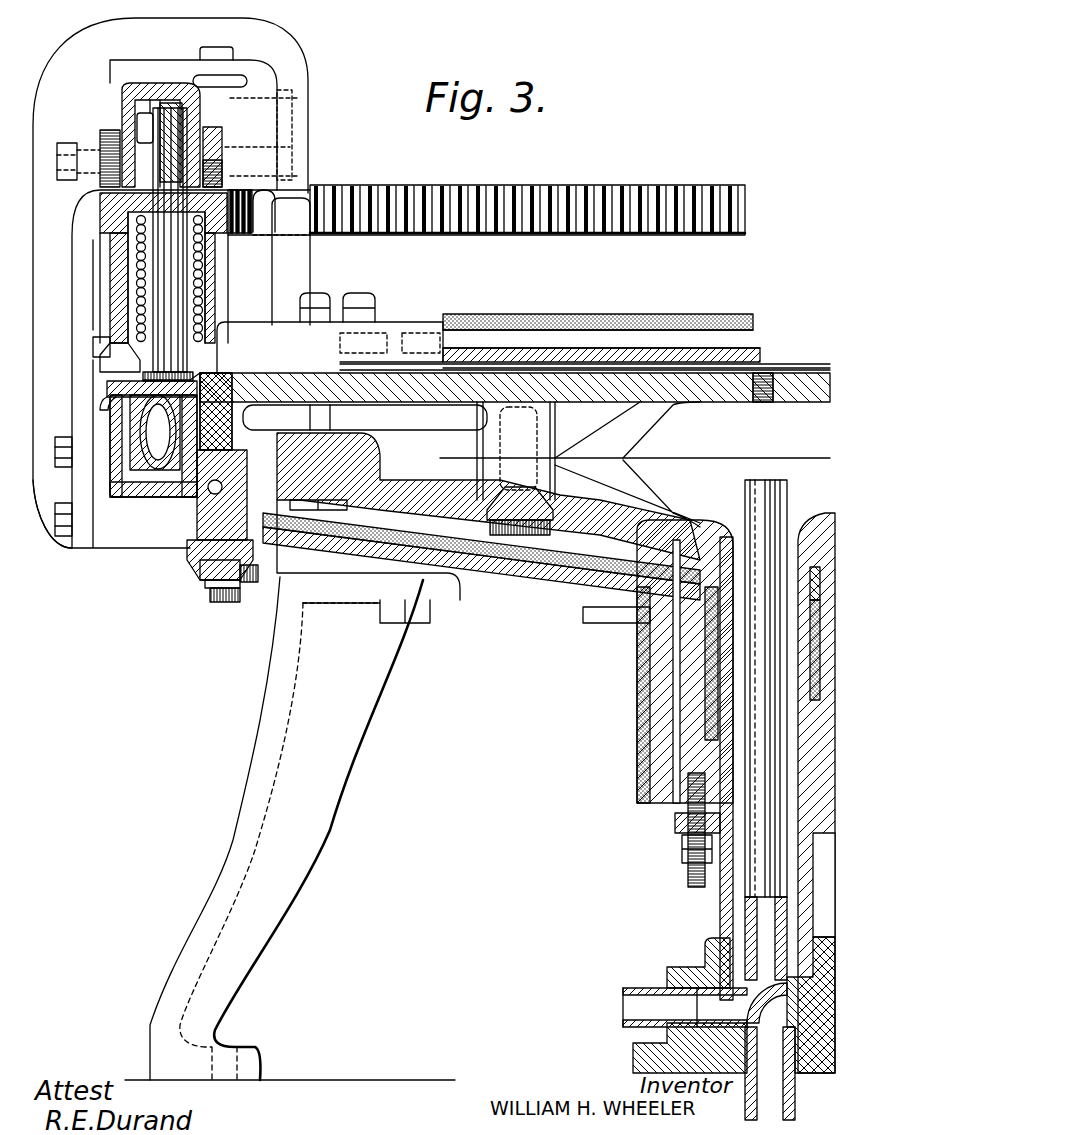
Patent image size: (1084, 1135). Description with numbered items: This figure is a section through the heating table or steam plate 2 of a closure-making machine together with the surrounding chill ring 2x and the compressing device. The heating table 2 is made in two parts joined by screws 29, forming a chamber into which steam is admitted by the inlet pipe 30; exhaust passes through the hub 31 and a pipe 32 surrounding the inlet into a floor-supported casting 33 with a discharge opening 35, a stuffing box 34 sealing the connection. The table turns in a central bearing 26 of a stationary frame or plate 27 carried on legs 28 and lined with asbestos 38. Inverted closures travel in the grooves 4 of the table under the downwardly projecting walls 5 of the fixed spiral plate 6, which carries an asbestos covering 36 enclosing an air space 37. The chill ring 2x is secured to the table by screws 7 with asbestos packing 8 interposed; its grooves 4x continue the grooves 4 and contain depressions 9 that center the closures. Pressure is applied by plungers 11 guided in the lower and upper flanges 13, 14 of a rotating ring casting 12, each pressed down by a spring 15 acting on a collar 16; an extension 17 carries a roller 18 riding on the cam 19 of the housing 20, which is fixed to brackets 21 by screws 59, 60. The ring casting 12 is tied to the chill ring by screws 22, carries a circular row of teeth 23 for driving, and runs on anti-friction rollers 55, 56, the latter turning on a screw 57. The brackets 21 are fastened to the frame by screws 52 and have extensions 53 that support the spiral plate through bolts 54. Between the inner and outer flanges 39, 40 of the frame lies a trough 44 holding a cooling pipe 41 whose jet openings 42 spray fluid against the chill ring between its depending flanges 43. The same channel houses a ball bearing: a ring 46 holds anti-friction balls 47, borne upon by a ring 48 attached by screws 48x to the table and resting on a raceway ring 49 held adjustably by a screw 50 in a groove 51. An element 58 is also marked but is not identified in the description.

The heating table or steam plate 2 is at (620, 370).
The chill ring 2x is at (202, 378).
The channels or grooves 4 is at (462, 372).
The grooves of the chill ring 4x is at (100, 352).
The downwardly projecting walls or ribs 5 is at (463, 373).
The plate 6 is at (540, 353).
The screws 7 is at (214, 440).
The asbestos packing 8 is at (243, 423).
The depressions 9 is at (140, 377).
The plungers 11 is at (110, 293).
The casting of ring shape 12 is at (113, 263).
The inturned lower flange 13 is at (213, 302).
The inturned upper flange 14 is at (243, 183).
The spring 15 is at (130, 233).
The collar 16 is at (138, 352).
The extension 17 is at (157, 152).
The roller 18 is at (170, 103).
The cam 19 is at (167, 167).
The housing or ring casting 20 is at (290, 130).
The brackets 21 is at (270, 52).
The screws 22 is at (169, 240).
The circular row of teeth 23 is at (247, 231).
The central bearing 26 is at (660, 710).
The frame or plate 27 is at (533, 566).
The legs 28 is at (290, 828).
The screws 29 is at (333, 502).
The steam inlet pipe 30 is at (758, 495).
The hub 31 is at (730, 740).
The exhaust pipe 32 is at (727, 903).
The casting 33 is at (667, 968).
The stuffing box 34 is at (678, 820).
The discharge opening 35 is at (770, 1073).
The asbestos covering 36 is at (738, 318).
The air space 37 is at (583, 340).
The asbestos lining 38 is at (490, 553).
The inner flange 39 is at (260, 488).
The outer flange 40 is at (108, 522).
The cooling pipe 41 is at (143, 428).
The jet openings 42 is at (110, 383).
The depending flanges 43 is at (108, 399).
The trough 44 is at (208, 492).
The ring 46 is at (249, 583).
The anti-friction balls 47 is at (205, 562).
The ring 48 is at (190, 495).
The screws 48x is at (318, 418).
The raceway ring 49 is at (215, 583).
The screw 50 is at (232, 603).
The groove 51 is at (190, 533).
The screws 52 is at (63, 522).
The extensions 53 is at (212, 147).
The bolts 54 is at (367, 297).
The anti-friction roller 55 is at (118, 132).
The anti-friction roller 56 is at (293, 130).
The screw 57 is at (290, 172).
The link 58 is at (230, 97).
The screws 59 is at (208, 67).
The screws 60 is at (210, 143).